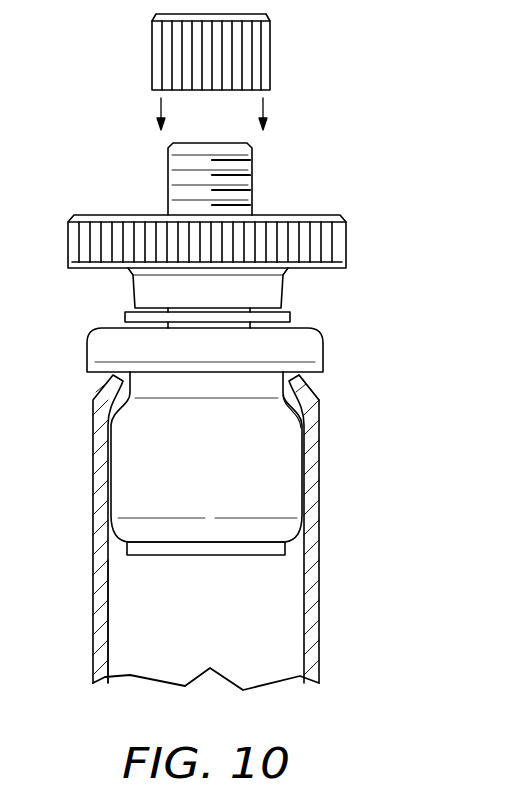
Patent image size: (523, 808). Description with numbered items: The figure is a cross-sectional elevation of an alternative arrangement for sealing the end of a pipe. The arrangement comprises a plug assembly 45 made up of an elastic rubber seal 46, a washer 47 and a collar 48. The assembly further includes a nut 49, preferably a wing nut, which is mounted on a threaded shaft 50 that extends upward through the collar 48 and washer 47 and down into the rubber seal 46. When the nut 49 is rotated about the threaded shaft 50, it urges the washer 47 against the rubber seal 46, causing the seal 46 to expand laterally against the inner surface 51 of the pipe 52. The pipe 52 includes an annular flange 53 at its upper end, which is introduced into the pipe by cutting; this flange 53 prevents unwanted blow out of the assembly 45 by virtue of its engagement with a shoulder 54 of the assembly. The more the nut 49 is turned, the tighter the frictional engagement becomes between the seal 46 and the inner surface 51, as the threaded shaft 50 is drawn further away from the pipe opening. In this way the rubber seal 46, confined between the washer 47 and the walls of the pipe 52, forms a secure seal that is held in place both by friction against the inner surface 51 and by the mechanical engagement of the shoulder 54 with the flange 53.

The plug assembly 45 is at (372, 268).
The elastic rubber seal 46 is at (280, 480).
The washer 47 is at (290, 318).
The collar 48 is at (300, 350).
The nut 49 is at (115, 235).
The threaded shaft 50 is at (182, 176).
The inner surface 51 is at (105, 596).
The pipe 52 is at (320, 622).
The annular flange 53 is at (318, 394).
The shoulder 54 is at (284, 405).